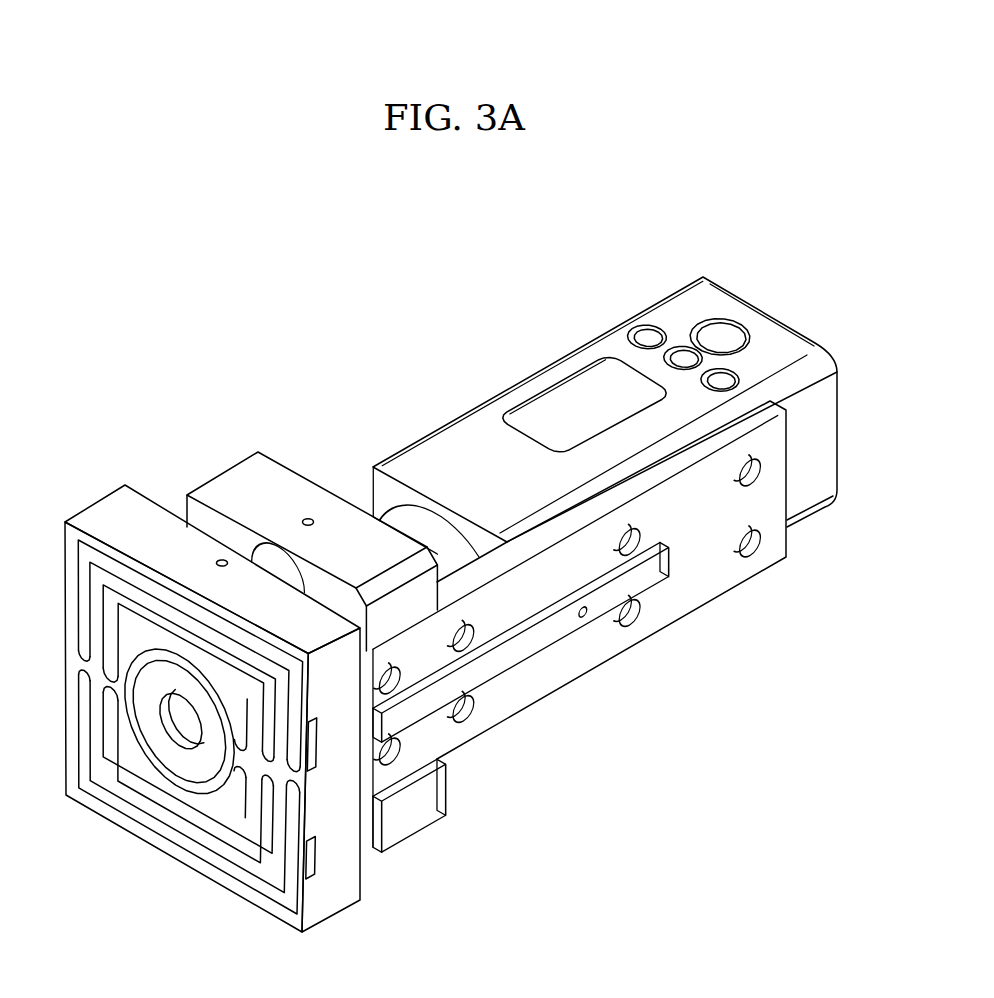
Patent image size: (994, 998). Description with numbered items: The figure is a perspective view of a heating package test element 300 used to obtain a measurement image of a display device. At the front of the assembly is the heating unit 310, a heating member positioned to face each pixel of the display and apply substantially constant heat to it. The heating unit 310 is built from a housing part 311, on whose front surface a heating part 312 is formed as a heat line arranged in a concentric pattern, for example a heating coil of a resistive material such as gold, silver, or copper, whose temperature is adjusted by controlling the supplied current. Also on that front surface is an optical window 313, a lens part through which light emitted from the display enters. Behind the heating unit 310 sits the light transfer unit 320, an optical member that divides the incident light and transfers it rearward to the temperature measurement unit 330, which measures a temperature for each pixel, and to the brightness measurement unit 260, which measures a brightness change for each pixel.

The heating package test element 300 is at (791, 218).
The heating unit 310 is at (124, 483).
The housing part 311 is at (338, 889).
The heating part 312 is at (256, 853).
The optical window 313 is at (183, 735).
The light transfer unit 320 is at (269, 473).
The temperature measurement unit 330 is at (467, 431).
The brightness measurement unit 260 is at (605, 564).